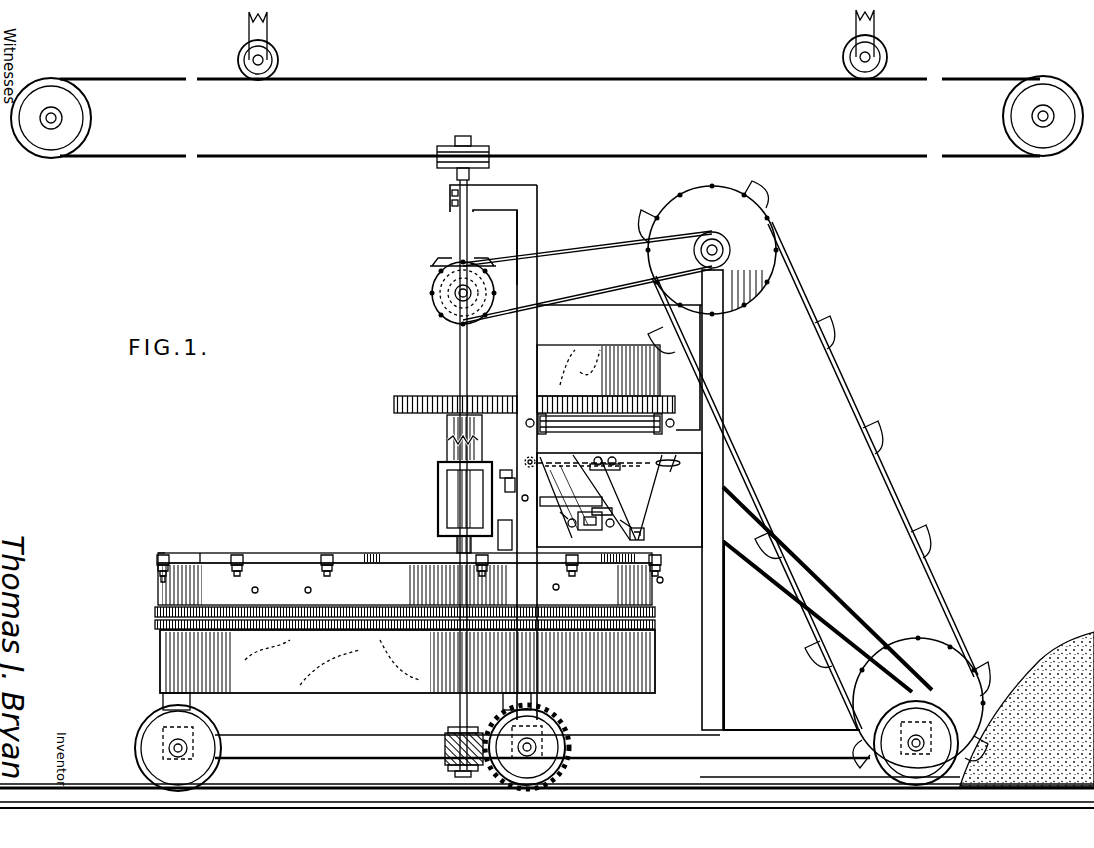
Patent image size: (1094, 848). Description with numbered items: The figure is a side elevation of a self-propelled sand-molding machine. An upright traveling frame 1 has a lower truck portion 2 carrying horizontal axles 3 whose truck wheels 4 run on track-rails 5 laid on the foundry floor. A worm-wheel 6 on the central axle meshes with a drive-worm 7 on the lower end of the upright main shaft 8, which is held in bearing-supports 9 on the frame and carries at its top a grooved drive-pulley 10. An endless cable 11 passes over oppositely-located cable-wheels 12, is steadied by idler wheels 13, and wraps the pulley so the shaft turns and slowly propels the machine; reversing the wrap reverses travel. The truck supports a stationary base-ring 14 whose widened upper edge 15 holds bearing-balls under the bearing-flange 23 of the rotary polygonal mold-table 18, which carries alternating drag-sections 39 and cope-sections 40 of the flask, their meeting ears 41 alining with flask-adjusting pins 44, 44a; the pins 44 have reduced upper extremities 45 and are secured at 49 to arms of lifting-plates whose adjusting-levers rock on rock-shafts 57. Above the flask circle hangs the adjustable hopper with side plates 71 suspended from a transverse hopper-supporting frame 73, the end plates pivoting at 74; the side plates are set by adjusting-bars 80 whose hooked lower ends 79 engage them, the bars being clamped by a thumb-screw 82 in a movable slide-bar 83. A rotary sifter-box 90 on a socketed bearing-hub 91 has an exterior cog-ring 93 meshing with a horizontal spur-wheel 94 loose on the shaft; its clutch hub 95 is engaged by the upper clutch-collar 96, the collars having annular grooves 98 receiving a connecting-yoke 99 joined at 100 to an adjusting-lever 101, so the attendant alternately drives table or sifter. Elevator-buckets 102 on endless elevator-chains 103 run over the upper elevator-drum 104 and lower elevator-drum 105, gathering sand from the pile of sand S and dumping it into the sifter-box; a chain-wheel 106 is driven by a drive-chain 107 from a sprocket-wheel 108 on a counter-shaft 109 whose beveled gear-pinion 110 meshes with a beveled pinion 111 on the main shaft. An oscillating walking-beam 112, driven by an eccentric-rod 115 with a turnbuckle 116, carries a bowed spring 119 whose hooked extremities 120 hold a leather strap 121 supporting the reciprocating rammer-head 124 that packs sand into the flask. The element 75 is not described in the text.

The upright traveling frame 1 is at (724, 398).
The lower truck portion 2 is at (325, 734).
The horizontal axle 3 is at (539, 747).
The truck wheel 4 is at (140, 727).
The track-rail 5 is at (363, 790).
The worm-wheel 6 is at (568, 771).
The drive-worm 7 is at (445, 766).
The upright main shaft 8 is at (468, 358).
The bearing-support 9 is at (502, 190).
The grooved drive-pulley 10 is at (470, 141).
The endless cable 11 is at (572, 75).
The cable-wheel 12 is at (83, 118).
The idler wheel 13 is at (279, 56).
The stationary base-ring 14 is at (407, 670).
The widened upper edge 15 is at (157, 626).
The rotary polygonal mold-table 18 is at (405, 584).
The bearing-flange 23 is at (155, 610).
The drag-section 39 is at (196, 560).
The cope-section 40 is at (280, 560).
The meeting ear 41 is at (238, 555).
The flask-adjusting pin 44 is at (158, 568).
The flask-adjusting pin 44a is at (234, 576).
The reduced upper extremity 45 is at (160, 556).
The pin fastening 49 is at (160, 581).
The rock-shaft 57 is at (258, 590).
The adjustable side plate 71 is at (650, 490).
The transverse hopper-supporting frame 73 is at (612, 432).
The end plate pivot 74 is at (540, 433).
The slide bar 75 is at (593, 471).
The hooked lower end 79 is at (644, 538).
The adjusting-bar 80 is at (604, 501).
The thumb-screw 82 is at (585, 497).
The movable slide-bar 83 is at (610, 468).
The rotary sifter-box 90 is at (578, 352).
The socketed bearing-hub 91 is at (458, 545).
The cog-ring 93 is at (575, 388).
The horizontal spur-wheel 94 is at (416, 397).
The clutch hub 95 is at (447, 428).
The upper clutch-collar 96 is at (447, 449).
The annular groove 98 is at (447, 482).
The connecting-yoke 99 is at (447, 510).
The yoke connection 100 is at (524, 461).
The adjusting-lever 101 is at (675, 470).
The elevator-bucket 102 is at (832, 314).
The endless elevator-chain 103 is at (855, 377).
The upper elevator-drum 104 is at (731, 246).
The lower elevator-drum 105 is at (919, 702).
The chain-wheel 106 is at (712, 231).
The drive-chain 107 is at (580, 255).
The sprocket-wheel 108 is at (446, 316).
The counter-shaft 109 is at (455, 292).
The beveled gear-pinion 110 is at (442, 300).
The beveled pinion 111 is at (438, 265).
The oscillating walking-beam 112 is at (522, 489).
The eccentric-rod 115 is at (506, 481).
The turnbuckle 116 is at (518, 535).
The bowed spring 119 is at (612, 512).
The hooked extremity 120 is at (568, 527).
The leather strap 121 is at (588, 531).
The rammer-head 124 is at (634, 528).
The pile of sand S is at (1060, 646).